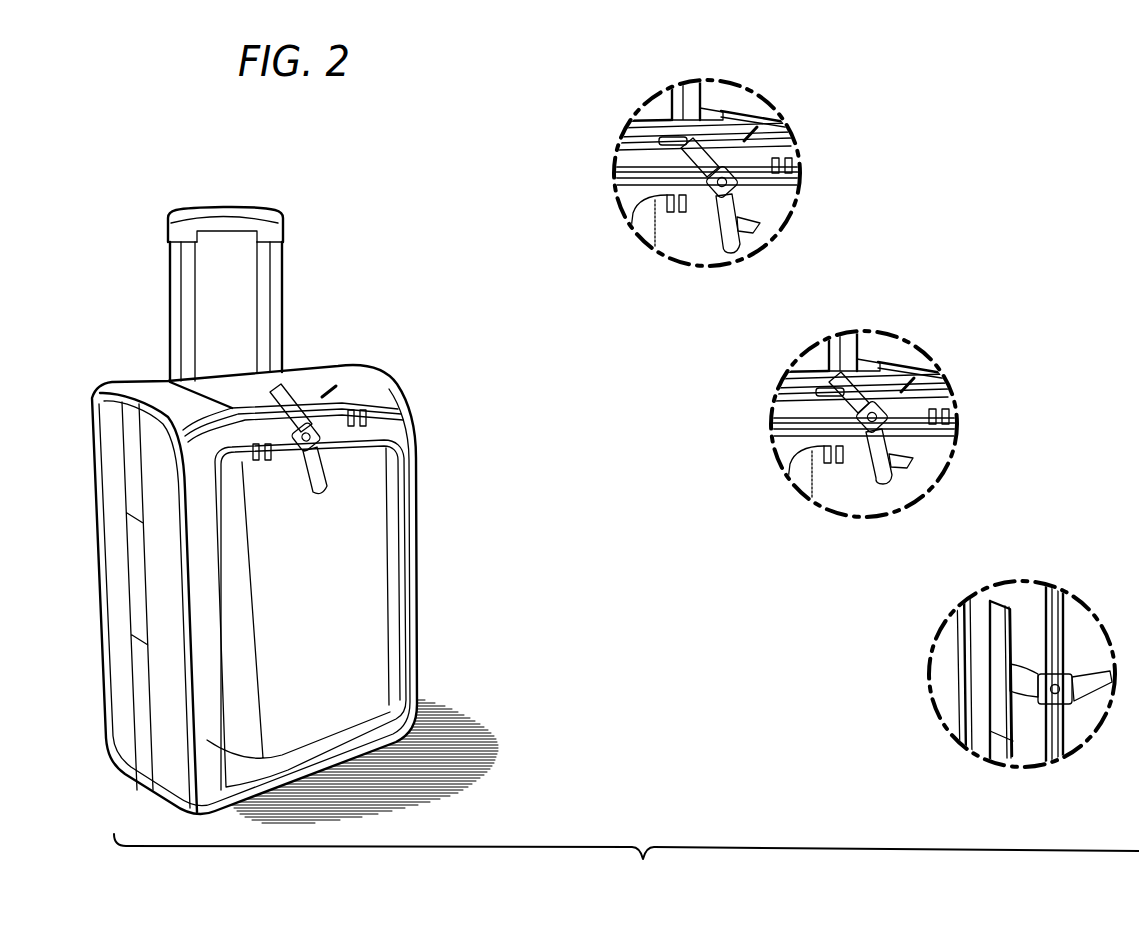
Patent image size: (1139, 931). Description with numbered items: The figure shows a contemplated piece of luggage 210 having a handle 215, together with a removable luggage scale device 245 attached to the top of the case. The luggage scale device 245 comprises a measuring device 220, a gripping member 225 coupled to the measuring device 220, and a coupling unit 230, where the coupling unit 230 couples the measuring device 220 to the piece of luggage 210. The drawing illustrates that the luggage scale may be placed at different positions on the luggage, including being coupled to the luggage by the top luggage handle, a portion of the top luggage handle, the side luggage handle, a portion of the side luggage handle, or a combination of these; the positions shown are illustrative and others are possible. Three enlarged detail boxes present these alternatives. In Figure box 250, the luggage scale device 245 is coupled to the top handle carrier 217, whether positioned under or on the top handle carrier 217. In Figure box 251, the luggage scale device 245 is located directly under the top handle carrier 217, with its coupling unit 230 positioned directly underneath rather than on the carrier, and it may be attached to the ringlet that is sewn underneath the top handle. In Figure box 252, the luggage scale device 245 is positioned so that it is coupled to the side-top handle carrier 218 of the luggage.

The piece of luggage 210 is at (436, 630).
The handle 215 is at (287, 290).
The top handle carrier 217 is at (672, 142).
The side-top handle carrier 218 is at (1000, 717).
The measuring device 220 is at (319, 432).
The gripping member 225 is at (326, 466).
The coupling unit 230 is at (292, 405).
The removable luggage scale device 245 is at (338, 504).
The Figure box 250 is at (596, 178).
The Figure box 251 is at (756, 430).
The Figure box 252 is at (920, 683).